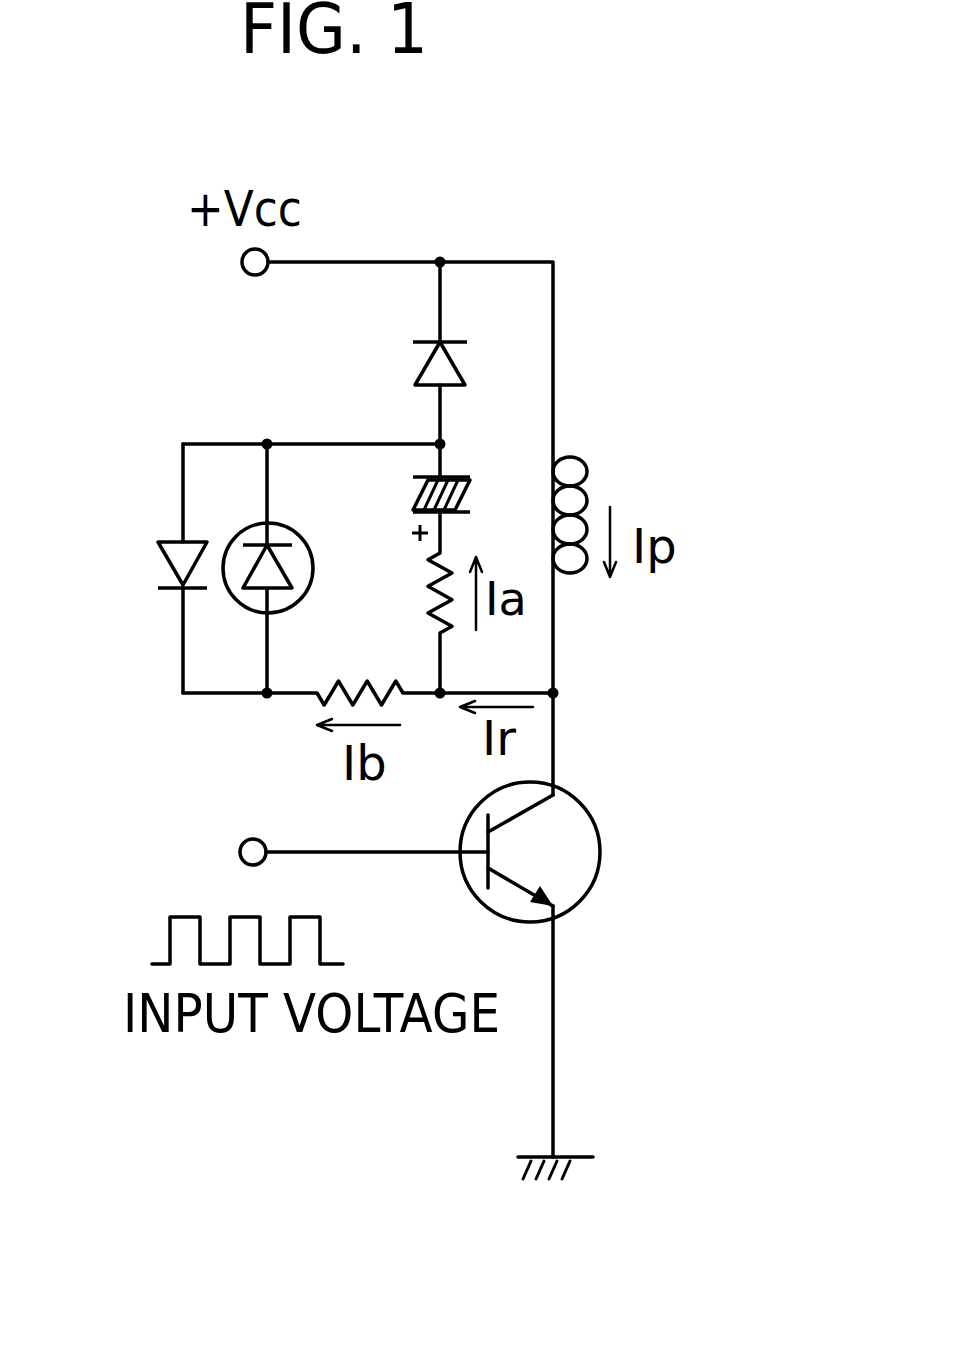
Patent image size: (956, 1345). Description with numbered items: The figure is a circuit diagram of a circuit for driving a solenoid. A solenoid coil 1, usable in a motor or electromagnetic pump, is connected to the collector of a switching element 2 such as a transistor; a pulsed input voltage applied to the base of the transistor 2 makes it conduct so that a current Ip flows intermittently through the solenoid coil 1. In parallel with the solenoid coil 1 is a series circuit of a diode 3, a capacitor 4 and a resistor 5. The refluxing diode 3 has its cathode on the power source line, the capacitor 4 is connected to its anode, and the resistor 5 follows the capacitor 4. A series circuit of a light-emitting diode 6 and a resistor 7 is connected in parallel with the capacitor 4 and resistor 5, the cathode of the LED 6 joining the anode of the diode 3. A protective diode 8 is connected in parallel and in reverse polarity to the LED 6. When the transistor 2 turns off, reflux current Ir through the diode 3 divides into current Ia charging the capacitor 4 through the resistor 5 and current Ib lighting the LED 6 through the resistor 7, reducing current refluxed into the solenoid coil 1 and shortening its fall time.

The solenoid coil 1 is at (583, 484).
The switching element 2 is at (580, 852).
The diode 3 is at (415, 372).
The capacitor 4 is at (413, 488).
The resistor 5 is at (432, 606).
The light-emitting diode 6 is at (248, 545).
The resistor 7 is at (326, 696).
The diode 8 is at (157, 563).